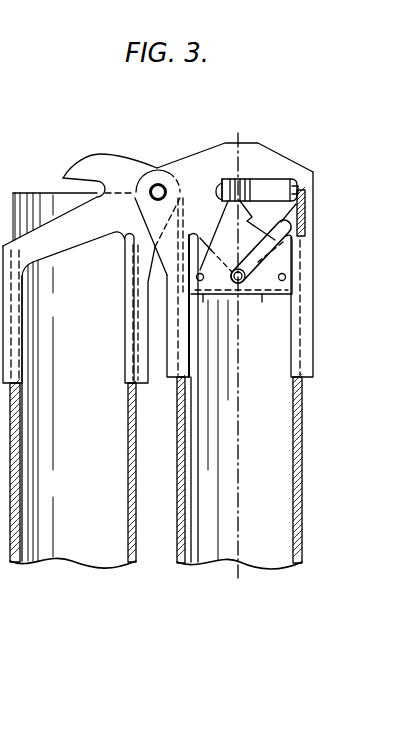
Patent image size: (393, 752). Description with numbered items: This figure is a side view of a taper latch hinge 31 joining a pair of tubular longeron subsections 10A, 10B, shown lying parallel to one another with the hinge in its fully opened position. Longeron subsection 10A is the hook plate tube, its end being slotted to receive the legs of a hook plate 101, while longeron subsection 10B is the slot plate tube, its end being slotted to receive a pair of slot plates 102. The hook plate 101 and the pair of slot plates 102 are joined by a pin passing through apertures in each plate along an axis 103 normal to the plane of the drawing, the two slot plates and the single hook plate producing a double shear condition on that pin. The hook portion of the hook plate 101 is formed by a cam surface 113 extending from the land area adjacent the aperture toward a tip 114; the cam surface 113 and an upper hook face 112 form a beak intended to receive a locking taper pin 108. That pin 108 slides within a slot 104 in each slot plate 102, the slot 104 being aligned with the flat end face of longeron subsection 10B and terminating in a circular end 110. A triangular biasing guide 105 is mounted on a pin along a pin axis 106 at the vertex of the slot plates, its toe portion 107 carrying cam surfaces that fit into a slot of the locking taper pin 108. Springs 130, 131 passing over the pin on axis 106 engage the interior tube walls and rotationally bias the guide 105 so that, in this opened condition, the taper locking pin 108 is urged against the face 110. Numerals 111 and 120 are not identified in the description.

The longeron subsection 10A is at (137, 540).
The longeron subsection 10B is at (303, 505).
The taper latch hinge 31 is at (259, 247).
The hook plate 101 is at (90, 249).
The slot plate 102 is at (272, 157).
The axis 103 is at (158, 190).
The slot 104 is at (299, 184).
The triangular biasing guide 105 is at (240, 306).
The pin axis 106 is at (237, 284).
The toe portion 107 is at (272, 174).
The locking taper pin 108 is at (230, 183).
The circular end 110 is at (214, 190).
The piston rod 111 is at (306, 194).
The upper hook face 112 is at (60, 186).
The cam surface 113 is at (116, 156).
The tip 114 is at (52, 192).
The centerline axis 120 is at (238, 460).
The spring 130 is at (282, 242).
The spring 131 is at (288, 243).